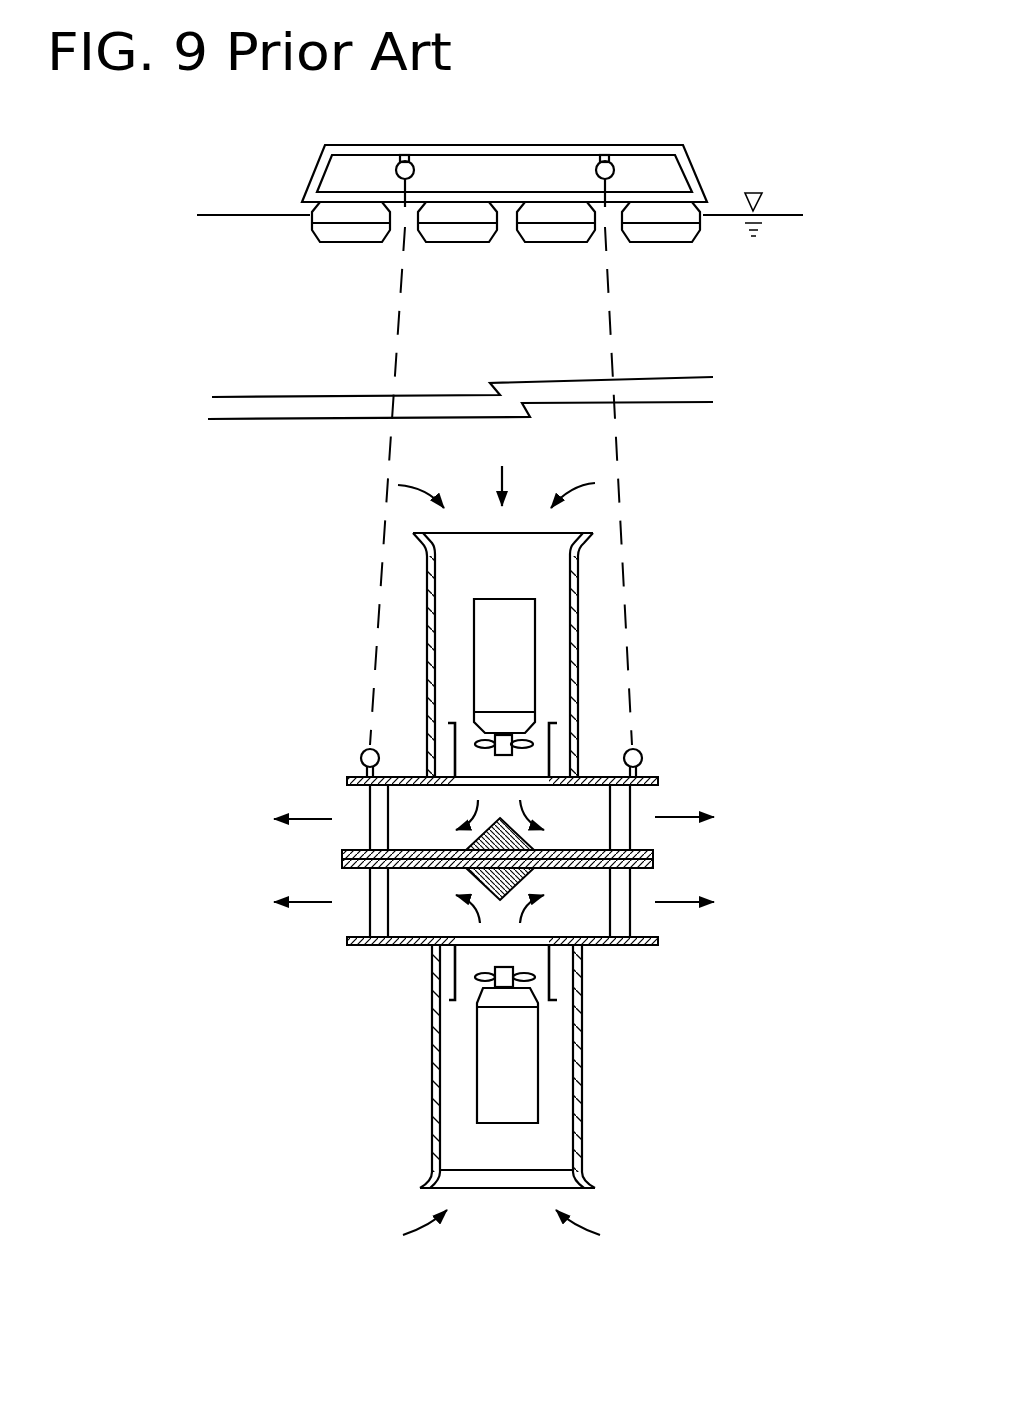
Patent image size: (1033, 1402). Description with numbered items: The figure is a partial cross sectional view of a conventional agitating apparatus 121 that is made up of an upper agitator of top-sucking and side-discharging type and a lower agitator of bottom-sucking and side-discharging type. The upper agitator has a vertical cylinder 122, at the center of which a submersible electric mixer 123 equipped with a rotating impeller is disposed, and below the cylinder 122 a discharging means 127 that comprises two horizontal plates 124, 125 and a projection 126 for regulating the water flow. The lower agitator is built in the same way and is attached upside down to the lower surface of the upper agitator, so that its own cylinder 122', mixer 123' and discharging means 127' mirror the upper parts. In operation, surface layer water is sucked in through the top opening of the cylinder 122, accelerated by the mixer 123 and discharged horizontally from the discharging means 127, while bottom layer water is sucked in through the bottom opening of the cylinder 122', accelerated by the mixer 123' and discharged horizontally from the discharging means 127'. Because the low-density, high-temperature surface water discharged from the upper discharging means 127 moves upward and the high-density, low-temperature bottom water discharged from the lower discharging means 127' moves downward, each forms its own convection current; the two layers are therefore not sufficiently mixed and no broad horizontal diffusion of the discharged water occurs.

The agitating apparatus 121 is at (766, 716).
The vertical cylinder 122 is at (575, 655).
The vertical cylinder 122' is at (583, 1066).
The submersible electric mixer 123 is at (601, 677).
The submersible electric mixer 123' is at (606, 1045).
The horizontal plate 124 is at (658, 778).
The horizontal plate 125 is at (653, 852).
The projection 126 is at (460, 870).
The discharging means 127 is at (296, 842).
The discharging means 127' is at (696, 874).